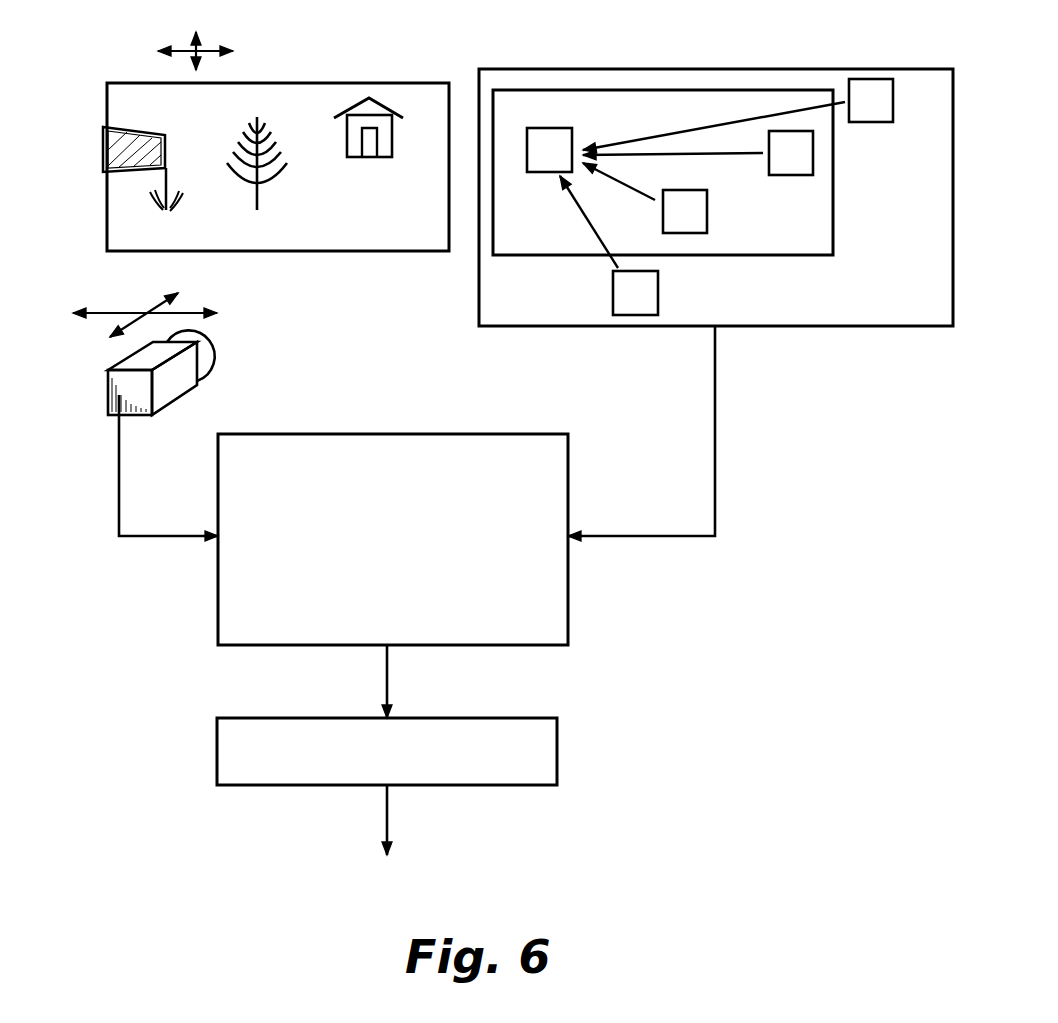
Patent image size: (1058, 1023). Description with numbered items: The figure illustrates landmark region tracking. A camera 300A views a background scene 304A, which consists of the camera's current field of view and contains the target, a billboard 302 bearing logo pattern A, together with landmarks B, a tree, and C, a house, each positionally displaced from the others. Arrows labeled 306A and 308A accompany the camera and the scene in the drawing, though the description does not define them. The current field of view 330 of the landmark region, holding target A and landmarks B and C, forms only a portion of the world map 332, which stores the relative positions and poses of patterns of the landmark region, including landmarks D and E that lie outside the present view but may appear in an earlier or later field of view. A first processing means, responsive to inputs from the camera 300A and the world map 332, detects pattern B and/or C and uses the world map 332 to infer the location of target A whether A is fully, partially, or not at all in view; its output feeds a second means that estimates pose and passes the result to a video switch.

The camera 300A is at (215, 355).
The billboard 302 is at (266, 161).
The background scene 304A is at (327, 247).
The camera motion 306A is at (153, 312).
The scene object motion 308A is at (207, 43).
The current field of view 330 is at (833, 162).
The world map 332 is at (855, 326).